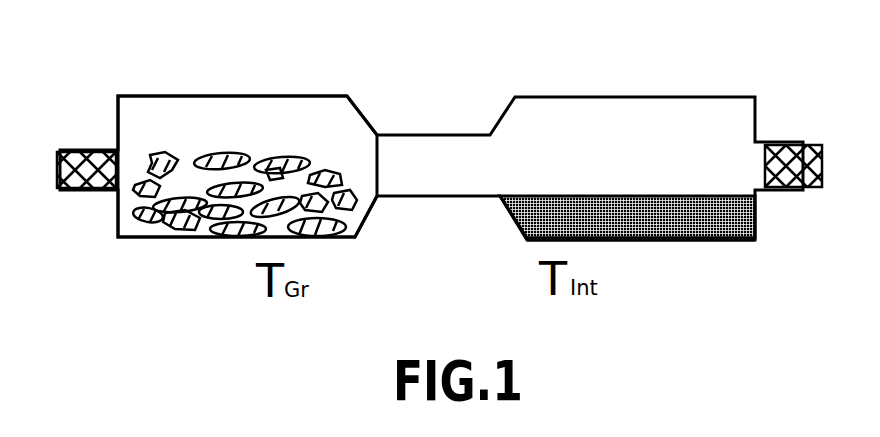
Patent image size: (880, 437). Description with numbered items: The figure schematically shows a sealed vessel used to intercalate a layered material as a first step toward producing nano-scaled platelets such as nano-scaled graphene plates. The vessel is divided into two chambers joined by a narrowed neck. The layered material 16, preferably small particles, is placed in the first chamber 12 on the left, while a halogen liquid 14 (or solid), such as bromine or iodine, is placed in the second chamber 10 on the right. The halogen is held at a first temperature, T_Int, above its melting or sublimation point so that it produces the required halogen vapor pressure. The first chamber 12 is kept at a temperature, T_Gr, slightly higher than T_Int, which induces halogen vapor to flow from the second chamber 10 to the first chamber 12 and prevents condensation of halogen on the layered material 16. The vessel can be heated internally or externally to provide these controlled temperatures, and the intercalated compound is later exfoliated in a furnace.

The second chamber 10 is at (579, 148).
The first chamber 12 is at (240, 122).
The halogen liquid 14 is at (658, 220).
The layered material 16 is at (210, 218).